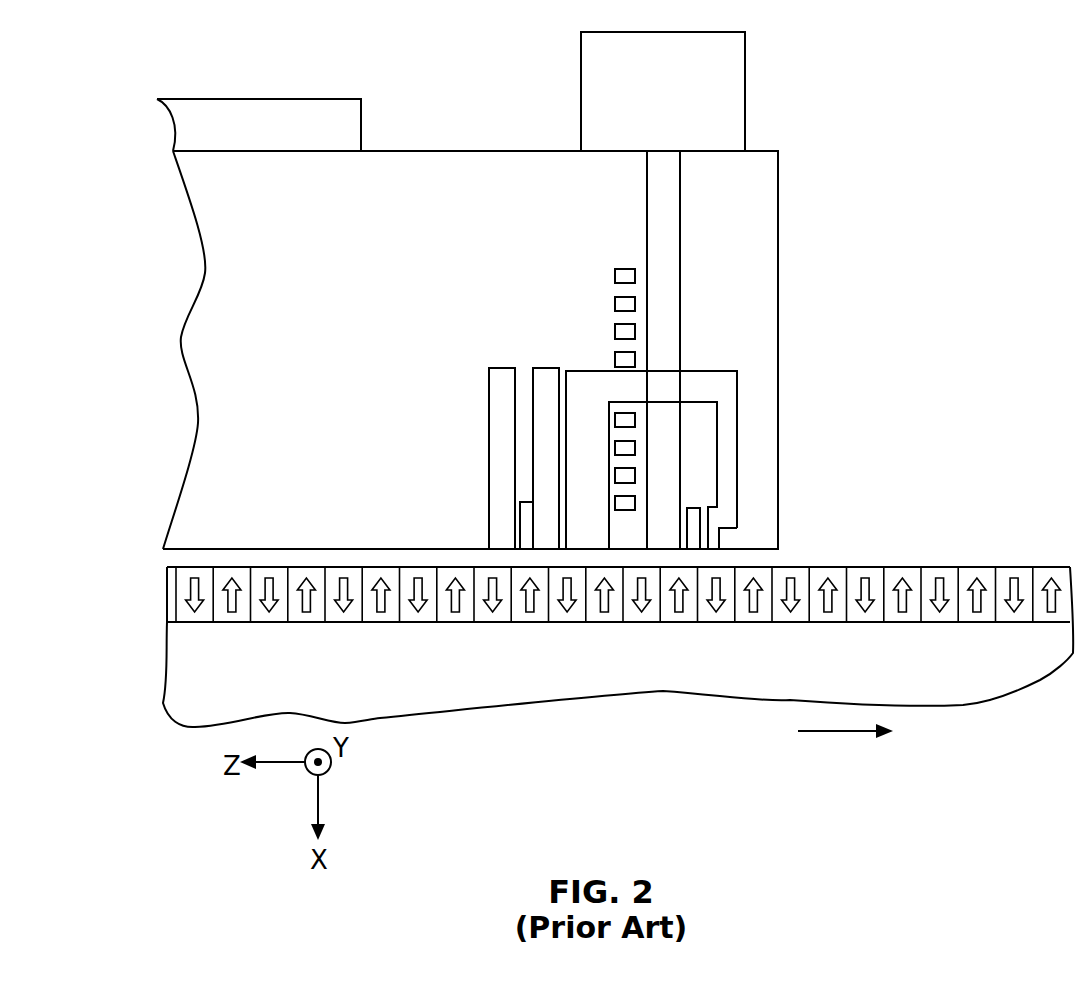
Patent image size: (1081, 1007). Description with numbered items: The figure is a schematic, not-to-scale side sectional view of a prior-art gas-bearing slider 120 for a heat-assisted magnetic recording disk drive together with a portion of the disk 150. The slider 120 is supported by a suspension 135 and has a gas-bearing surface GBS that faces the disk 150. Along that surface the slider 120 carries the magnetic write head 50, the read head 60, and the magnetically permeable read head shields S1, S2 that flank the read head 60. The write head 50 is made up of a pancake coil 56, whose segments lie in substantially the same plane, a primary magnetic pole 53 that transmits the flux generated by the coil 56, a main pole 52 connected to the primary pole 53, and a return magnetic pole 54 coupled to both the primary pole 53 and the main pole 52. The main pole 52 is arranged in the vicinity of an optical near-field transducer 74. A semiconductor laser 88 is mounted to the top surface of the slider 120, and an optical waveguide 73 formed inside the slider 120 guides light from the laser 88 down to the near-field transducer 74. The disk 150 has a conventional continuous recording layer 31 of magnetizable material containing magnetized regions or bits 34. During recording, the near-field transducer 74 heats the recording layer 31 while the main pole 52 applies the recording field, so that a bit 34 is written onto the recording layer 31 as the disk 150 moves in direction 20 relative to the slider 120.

The suspension 135 is at (293, 120).
The semiconductor laser 88 is at (730, 90).
The gas-bearing slider 120 is at (210, 432).
The optical waveguide 73 is at (662, 310).
The coil 56 is at (612, 275).
The magnetic write head 50 is at (582, 301).
The return magnetic pole 54 is at (588, 382).
The primary magnetic pole 53 is at (726, 420).
The main pole 52 is at (712, 539).
The optical near-field transducer 74 is at (695, 506).
The read head shield S1 is at (502, 457).
The read head shield S2 is at (550, 368).
The read head 60 is at (518, 533).
The gas-bearing surface GBS is at (757, 550).
The disk 150 is at (943, 693).
The recording layer 31 is at (148, 568).
The bit 34 is at (1018, 578).
The medium travel direction 20 is at (832, 731).